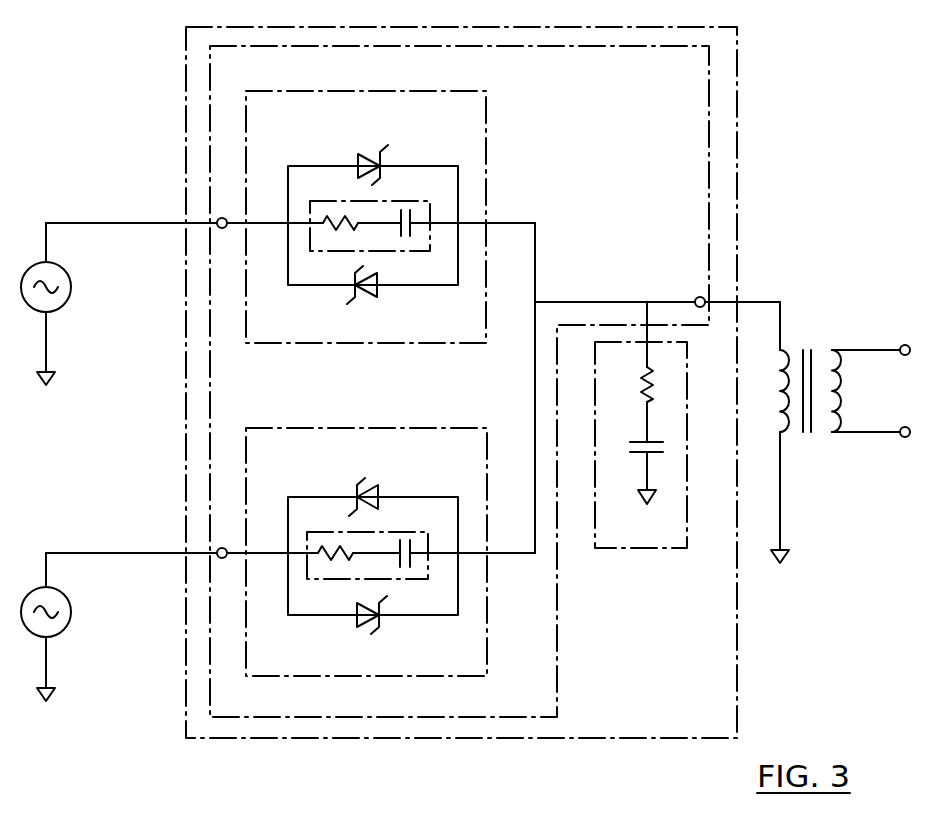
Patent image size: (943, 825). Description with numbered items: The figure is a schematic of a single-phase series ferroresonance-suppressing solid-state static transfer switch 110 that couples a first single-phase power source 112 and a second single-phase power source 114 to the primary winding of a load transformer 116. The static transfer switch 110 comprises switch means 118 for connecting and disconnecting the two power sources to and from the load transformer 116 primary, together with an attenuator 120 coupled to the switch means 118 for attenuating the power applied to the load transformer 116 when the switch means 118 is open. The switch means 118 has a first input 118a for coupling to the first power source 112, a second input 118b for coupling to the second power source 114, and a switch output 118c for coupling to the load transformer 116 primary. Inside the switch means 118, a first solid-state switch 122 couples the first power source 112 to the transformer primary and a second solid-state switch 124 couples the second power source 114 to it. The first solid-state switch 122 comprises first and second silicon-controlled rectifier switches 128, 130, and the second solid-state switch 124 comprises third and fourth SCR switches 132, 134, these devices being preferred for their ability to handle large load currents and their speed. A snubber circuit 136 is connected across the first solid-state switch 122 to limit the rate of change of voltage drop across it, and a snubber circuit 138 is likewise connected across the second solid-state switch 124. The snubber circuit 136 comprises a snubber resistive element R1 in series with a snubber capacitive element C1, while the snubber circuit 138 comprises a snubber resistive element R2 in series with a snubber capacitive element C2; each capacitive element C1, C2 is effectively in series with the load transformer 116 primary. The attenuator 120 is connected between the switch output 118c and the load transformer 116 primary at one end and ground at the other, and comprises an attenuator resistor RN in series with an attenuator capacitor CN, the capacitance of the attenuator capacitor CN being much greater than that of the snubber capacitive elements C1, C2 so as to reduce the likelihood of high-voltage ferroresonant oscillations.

The solid-state static transfer switch 110 is at (738, 684).
The first single-phase power source 112 is at (73, 288).
The second single-phase power source 114 is at (70, 600).
The load transformer 116 is at (808, 340).
The switch means 118 is at (557, 678).
The first input 118a is at (218, 220).
The second input 118b is at (218, 550).
The switch output 118c is at (698, 296).
The attenuator 120 is at (659, 548).
The first solid-state switch 122 is at (455, 90).
The second solid-state switch 124 is at (487, 672).
The first SCR switch 128 is at (366, 152).
The second SCR switch 130 is at (372, 297).
The third SCR switch 132 is at (375, 487).
The fourth SCR switch 134 is at (371, 634).
The snubber circuit 136 is at (392, 201).
The snubber circuit 138 is at (392, 532).
The snubber resistive element R1 is at (338, 215).
The snubber capacitive element C1 is at (412, 232).
The snubber resistive element R2 is at (336, 545).
The snubber capacitive element C2 is at (412, 563).
The attenuator resistor RN is at (628, 385).
The attenuator capacitor CN is at (630, 450).